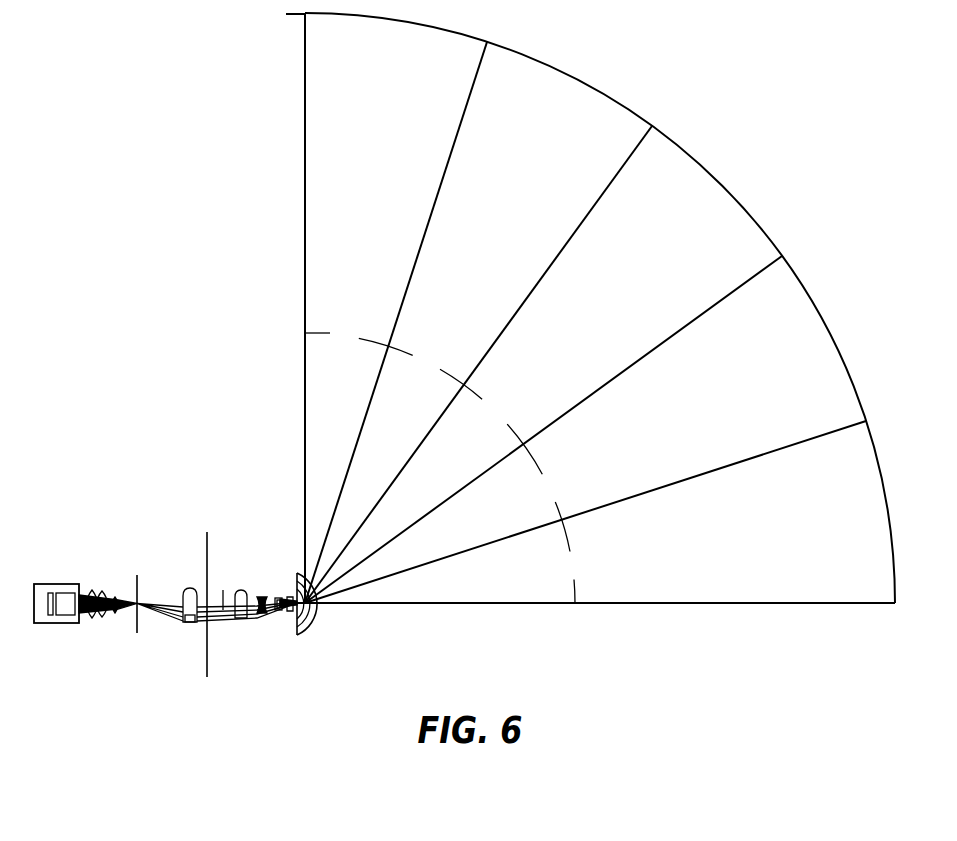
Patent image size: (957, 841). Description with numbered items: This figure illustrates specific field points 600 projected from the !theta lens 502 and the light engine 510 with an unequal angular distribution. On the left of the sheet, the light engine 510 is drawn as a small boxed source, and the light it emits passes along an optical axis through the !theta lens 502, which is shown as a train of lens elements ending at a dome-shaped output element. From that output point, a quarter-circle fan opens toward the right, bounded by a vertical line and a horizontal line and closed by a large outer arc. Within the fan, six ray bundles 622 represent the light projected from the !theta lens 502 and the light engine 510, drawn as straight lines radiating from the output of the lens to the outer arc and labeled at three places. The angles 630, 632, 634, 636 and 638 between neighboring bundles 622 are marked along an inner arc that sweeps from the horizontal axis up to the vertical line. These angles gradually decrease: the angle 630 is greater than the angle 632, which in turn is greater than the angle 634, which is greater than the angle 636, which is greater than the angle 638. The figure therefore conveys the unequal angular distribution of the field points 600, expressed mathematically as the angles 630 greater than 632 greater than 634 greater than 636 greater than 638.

The !theta lens 502 is at (161, 637).
The light engine 510 is at (56, 583).
The field points 600 is at (771, 70).
The ray bundles 622 is at (305, 100).
The angle 630 is at (572, 577).
The angle 632 is at (552, 513).
The angle 634 is at (511, 437).
The angle 636 is at (446, 374).
The angle 638 is at (359, 339).